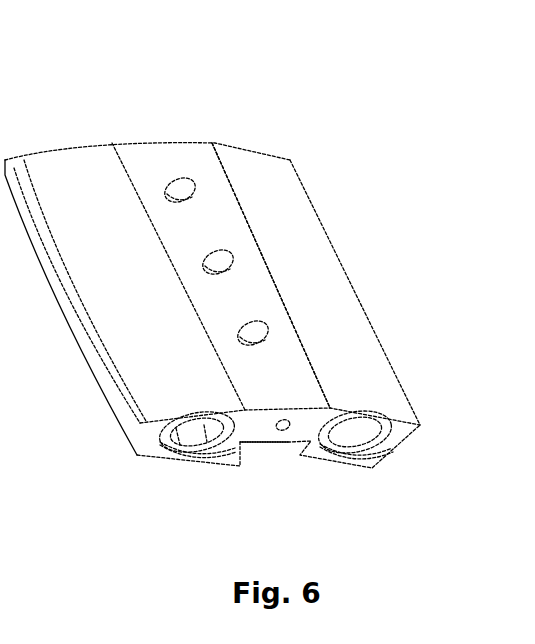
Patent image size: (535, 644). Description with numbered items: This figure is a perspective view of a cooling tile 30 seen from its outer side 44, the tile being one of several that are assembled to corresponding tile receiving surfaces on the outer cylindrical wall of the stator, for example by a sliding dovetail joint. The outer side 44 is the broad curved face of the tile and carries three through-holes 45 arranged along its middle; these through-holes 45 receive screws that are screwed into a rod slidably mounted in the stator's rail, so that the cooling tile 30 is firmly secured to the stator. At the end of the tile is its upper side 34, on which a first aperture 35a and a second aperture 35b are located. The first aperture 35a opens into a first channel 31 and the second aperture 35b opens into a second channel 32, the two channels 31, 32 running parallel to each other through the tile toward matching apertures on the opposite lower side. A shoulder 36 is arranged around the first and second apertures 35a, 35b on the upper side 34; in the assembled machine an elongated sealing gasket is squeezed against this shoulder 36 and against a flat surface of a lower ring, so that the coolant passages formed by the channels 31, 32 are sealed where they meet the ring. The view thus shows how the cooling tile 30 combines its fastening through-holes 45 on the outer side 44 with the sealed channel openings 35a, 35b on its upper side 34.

The cooling tile 30 is at (315, 108).
The first channel 31 is at (352, 430).
The second channel 32 is at (207, 422).
The upper side 34 is at (268, 445).
The first aperture 35a is at (352, 463).
The second aperture 35b is at (197, 465).
The shoulder 36 is at (165, 447).
The outer side 44 is at (277, 218).
The through-holes 45 is at (180, 190).